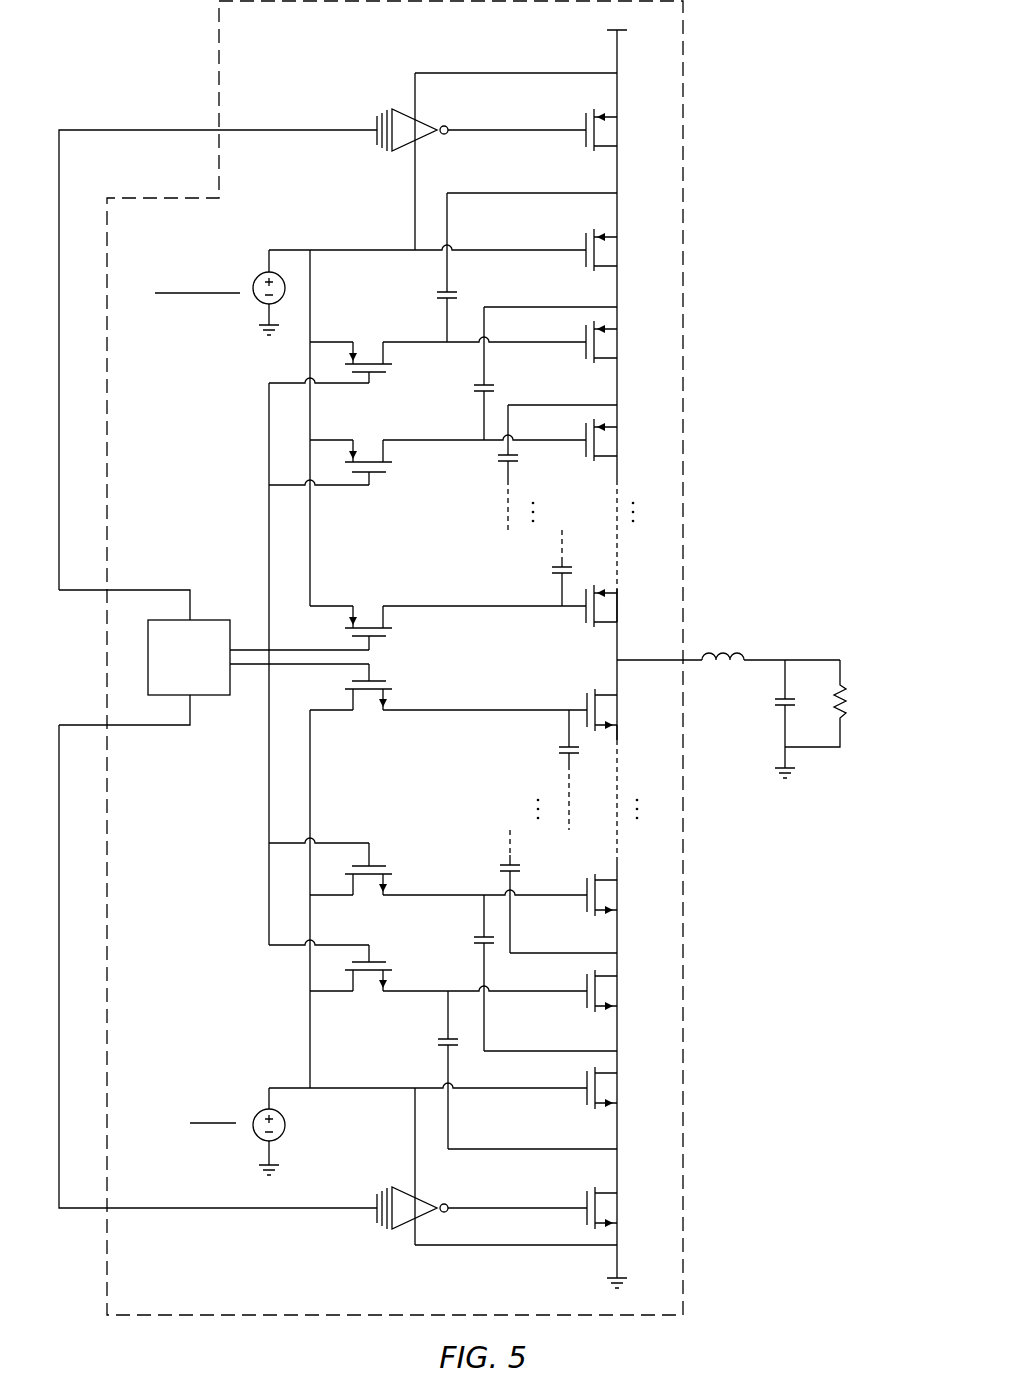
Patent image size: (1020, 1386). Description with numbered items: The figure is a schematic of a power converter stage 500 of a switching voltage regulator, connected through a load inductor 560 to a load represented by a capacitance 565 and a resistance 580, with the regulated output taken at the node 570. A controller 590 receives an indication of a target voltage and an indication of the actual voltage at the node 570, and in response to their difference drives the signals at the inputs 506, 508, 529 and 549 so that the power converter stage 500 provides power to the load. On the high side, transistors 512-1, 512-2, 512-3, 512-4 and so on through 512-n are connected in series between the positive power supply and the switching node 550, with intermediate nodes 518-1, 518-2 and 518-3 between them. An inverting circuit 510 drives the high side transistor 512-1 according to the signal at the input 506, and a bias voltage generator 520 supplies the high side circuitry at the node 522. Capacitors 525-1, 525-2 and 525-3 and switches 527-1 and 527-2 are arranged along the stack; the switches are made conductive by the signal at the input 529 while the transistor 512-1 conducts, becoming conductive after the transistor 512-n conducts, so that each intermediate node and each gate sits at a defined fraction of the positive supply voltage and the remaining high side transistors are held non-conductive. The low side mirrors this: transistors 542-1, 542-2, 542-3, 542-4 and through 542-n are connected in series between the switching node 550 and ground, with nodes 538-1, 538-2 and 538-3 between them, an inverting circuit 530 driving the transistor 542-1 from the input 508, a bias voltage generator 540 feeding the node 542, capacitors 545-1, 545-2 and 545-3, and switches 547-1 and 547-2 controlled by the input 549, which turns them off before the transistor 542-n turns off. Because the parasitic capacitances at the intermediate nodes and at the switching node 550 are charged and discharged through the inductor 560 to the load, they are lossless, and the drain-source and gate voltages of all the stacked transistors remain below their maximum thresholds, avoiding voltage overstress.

The power converter stage 500 is at (685, 88).
The input 506 is at (218, 347).
The input 508 is at (218, 966).
The inverting circuit 510 is at (400, 110).
The high side transistor 512-1 is at (628, 130).
The high side transistor 512-2 is at (628, 250).
The high side transistor 512-3 is at (628, 342).
The high side transistor 512-4 is at (628, 440).
The high side transistor 512-n is at (628, 606).
The node 518-1 is at (532, 179).
The node 518-2 is at (550, 293).
The node 518-3 is at (562, 388).
The bias voltage generator 520 is at (252, 272).
The high-side supply node 522 is at (427, 412).
The capacitor 525-1 is at (412, 267).
The capacitor 525-2 is at (450, 373).
The capacitor 525-3 is at (475, 467).
The switch 527-1 is at (448, 350).
The switch 527-2 is at (448, 450).
The input 529 is at (299, 514).
The inverting circuit 530 is at (400, 1232).
The first low-side intermediate node 538-1 is at (532, 1133).
The second low-side intermediate node 538-2 is at (550, 1035).
The third low-side intermediate node 538-3 is at (563, 936).
The bias voltage generator 540 is at (286, 1122).
The low-side supply node 542 is at (413, 899).
The low side transistor 542-1 is at (629, 1208).
The low side transistor 542-2 is at (629, 1088).
The low side transistor 542-3 is at (629, 991).
The low side transistor 542-4 is at (629, 895).
The low side transistor 542-n is at (629, 710).
The capacitor 545-1 is at (420, 1070).
The capacitor 545-2 is at (454, 973).
The capacitor 545-3 is at (478, 891).
The switch 547-1 is at (448, 980).
The switch 547-2 is at (448, 881).
The input 549 is at (299, 797).
The switching node 550 is at (637, 660).
The load inductor 560 is at (723, 642).
The capacitance 565 is at (762, 719).
The node 570 is at (792, 642).
The resistance 580 is at (838, 703).
The controller 590 is at (206, 618).